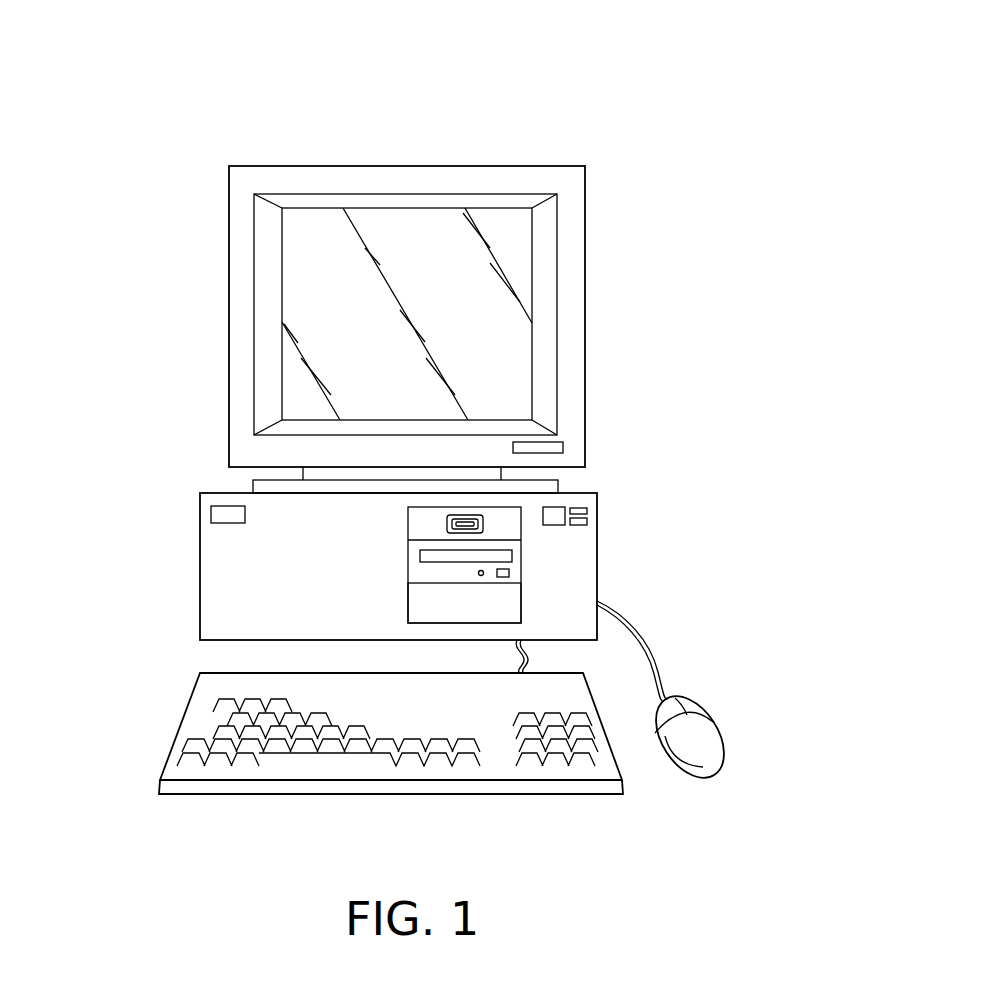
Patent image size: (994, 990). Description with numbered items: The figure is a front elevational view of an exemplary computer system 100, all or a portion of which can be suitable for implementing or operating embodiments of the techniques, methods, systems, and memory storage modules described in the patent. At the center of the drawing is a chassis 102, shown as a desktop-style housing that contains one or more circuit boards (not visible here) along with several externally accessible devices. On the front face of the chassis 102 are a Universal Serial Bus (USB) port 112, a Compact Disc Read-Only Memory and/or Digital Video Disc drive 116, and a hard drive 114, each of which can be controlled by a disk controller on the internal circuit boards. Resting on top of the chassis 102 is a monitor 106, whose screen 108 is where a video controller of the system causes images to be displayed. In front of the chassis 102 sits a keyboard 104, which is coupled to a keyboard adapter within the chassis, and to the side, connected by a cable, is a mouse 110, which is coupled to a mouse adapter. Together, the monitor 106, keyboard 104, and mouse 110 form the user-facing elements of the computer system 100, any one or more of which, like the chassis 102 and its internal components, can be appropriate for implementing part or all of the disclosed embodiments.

The computer system 100 is at (580, 142).
The chassis 102 is at (200, 567).
The keyboard 104 is at (180, 720).
The monitor 106 is at (300, 165).
The screen 108 is at (327, 318).
The mouse 110 is at (708, 728).
The Universal Serial Bus (USB) port 112 is at (483, 520).
The hard drive 114 is at (513, 602).
The CD-ROM and/or DVD drive 116 is at (512, 563).